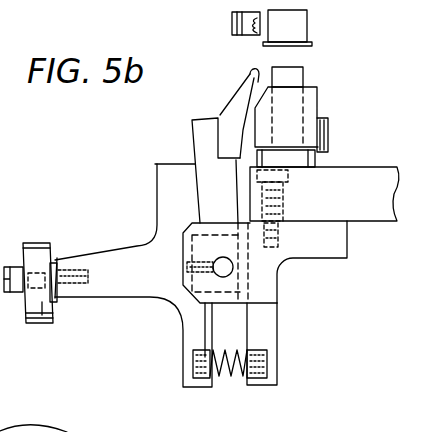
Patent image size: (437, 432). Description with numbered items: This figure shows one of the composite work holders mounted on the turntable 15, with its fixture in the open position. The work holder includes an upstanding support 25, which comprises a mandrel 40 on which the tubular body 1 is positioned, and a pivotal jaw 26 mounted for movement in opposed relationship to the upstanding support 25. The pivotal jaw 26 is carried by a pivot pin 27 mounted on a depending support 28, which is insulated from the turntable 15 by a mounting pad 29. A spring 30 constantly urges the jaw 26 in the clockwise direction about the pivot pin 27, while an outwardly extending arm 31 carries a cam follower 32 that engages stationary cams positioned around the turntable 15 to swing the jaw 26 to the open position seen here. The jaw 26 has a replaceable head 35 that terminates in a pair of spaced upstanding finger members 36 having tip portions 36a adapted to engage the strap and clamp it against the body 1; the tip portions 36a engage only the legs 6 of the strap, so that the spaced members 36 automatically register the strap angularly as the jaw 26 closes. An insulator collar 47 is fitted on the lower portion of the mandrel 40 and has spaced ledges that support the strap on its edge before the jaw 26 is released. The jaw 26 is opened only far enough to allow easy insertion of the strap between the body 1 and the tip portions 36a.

The tubular body 1 is at (0, 428).
The leg of the strap 6 is at (352, 50).
The turntable 15 is at (380, 175).
The upstanding support 25 is at (342, 99).
The pivotal jaw 26 is at (157, 146).
The pivot pin 27 is at (233, 268).
The depending support 28 is at (272, 333).
The mounting pad 29 is at (347, 222).
The spring 30 is at (230, 378).
The outwardly extending arm 31 is at (130, 257).
The cam follower 32 is at (44, 310).
The replaceable head 35 is at (220, 117).
The upstanding finger member 36 is at (244, 85).
The tip portion 36a is at (250, 70).
The mandrel 40 is at (298, 77).
The insulator collar 47 is at (328, 132).